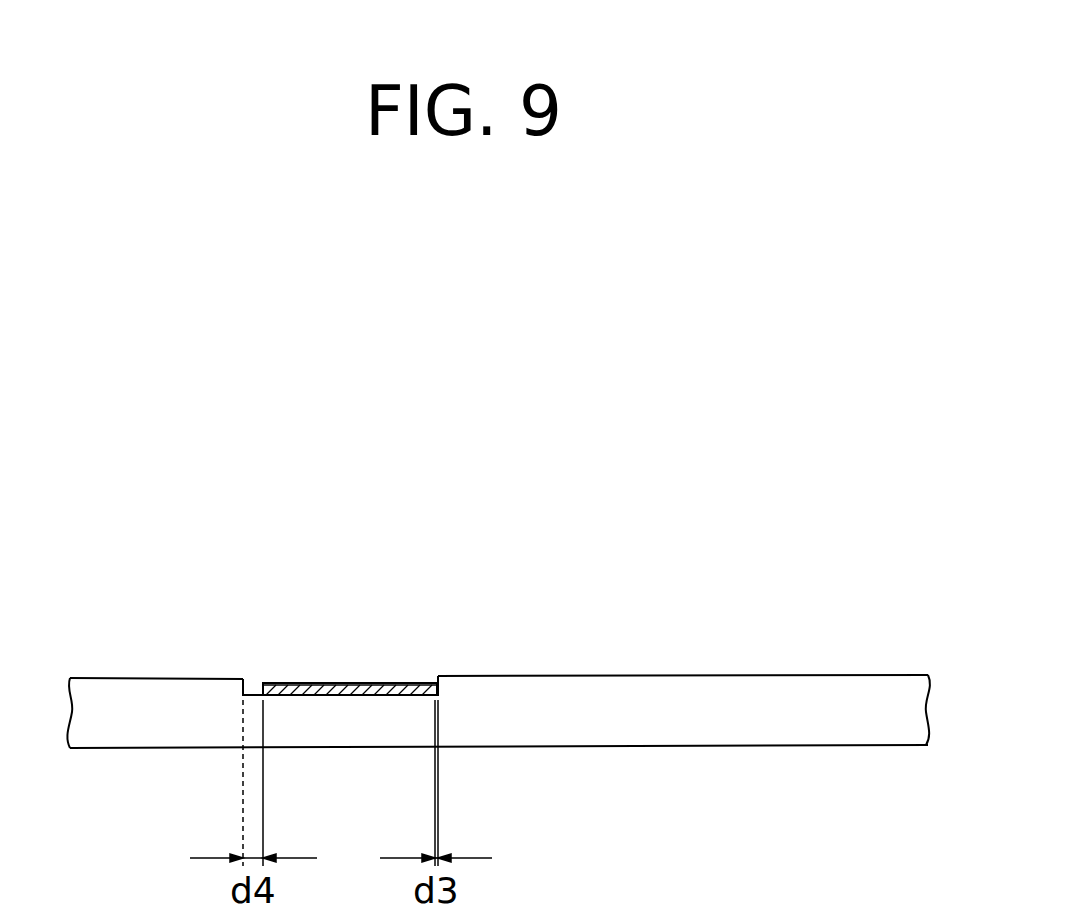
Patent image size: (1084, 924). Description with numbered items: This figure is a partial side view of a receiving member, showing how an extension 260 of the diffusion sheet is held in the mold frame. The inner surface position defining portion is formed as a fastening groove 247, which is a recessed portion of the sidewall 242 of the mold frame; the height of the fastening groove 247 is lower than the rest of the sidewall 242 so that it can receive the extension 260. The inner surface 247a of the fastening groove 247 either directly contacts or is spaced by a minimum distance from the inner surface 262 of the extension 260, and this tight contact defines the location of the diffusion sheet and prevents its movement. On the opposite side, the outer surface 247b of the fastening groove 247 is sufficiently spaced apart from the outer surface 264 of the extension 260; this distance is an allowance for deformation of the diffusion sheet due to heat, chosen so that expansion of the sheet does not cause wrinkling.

The sidewall 242 is at (592, 745).
The fastening groove 247 is at (351, 695).
The inner surface of the fastening groove 247a is at (442, 686).
The outer surface of the fastening groove 247b is at (241, 684).
The extension 260 is at (351, 620).
The inner surface of the extension 262 is at (418, 683).
The outer surface of the extension 264 is at (290, 683).